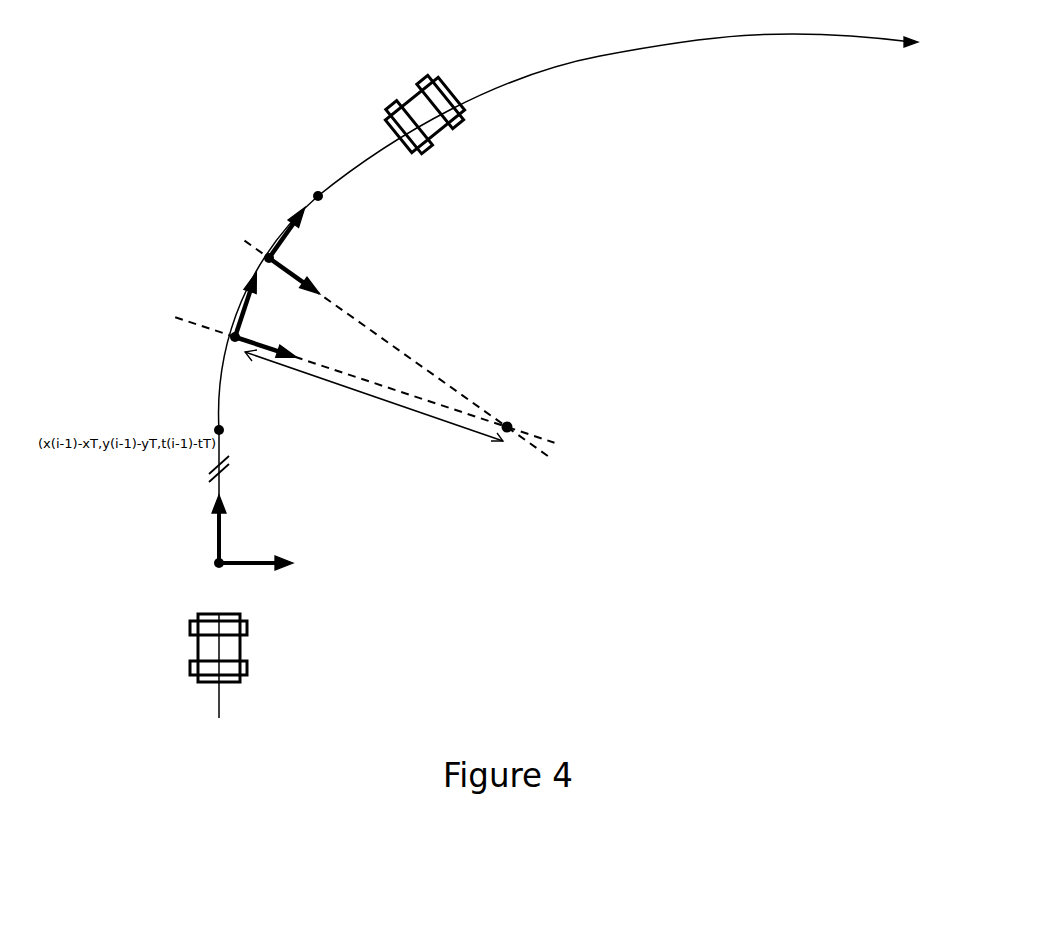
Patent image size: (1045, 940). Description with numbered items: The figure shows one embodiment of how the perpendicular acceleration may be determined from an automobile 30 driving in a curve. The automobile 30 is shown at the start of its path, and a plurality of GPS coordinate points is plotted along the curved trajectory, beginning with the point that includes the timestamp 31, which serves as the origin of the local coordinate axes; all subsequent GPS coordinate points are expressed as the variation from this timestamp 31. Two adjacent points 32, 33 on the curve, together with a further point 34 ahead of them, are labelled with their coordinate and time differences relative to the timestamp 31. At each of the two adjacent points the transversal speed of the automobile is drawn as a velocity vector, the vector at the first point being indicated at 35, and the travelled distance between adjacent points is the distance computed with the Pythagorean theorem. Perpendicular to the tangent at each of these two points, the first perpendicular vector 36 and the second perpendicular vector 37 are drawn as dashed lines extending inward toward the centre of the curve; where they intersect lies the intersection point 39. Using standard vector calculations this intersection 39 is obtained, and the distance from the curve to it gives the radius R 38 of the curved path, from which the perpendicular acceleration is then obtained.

The automobile 30 is at (250, 652).
The timestamp 31 is at (224, 558).
The position point i on trajectory 32 is at (117, 330).
The position point i+1 on trajectory 33 is at (397, 245).
The velocity vector V i+1,T 34 is at (237, 198).
The velocity vector V i,T 35 is at (210, 288).
The vector r_i,p 36 is at (316, 341).
The radial vector r i+1,p 37 is at (380, 290).
The radius R 38 is at (348, 424).
The intersection point (xc,yc) 39 is at (560, 421).